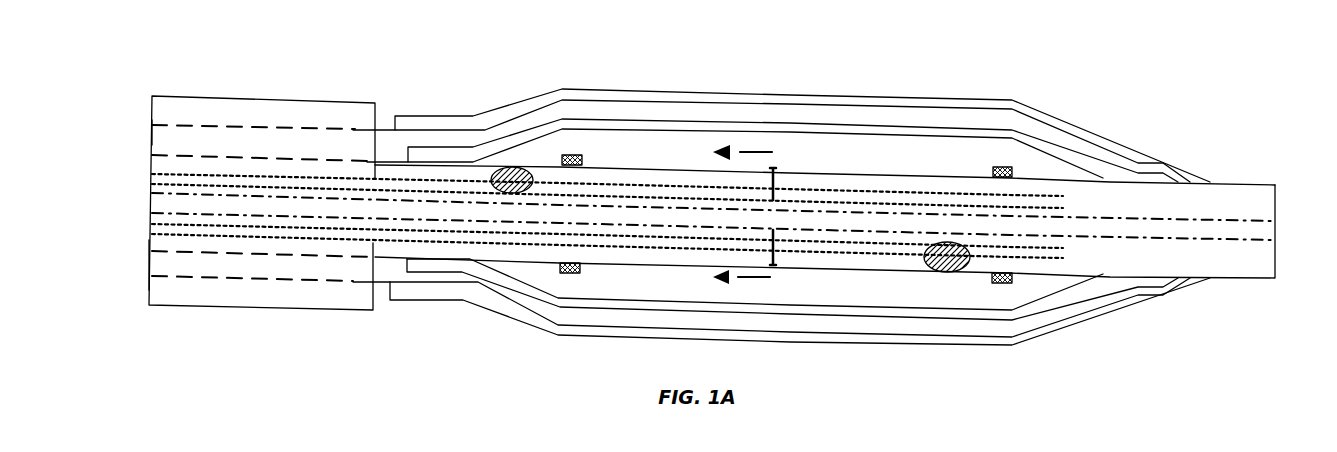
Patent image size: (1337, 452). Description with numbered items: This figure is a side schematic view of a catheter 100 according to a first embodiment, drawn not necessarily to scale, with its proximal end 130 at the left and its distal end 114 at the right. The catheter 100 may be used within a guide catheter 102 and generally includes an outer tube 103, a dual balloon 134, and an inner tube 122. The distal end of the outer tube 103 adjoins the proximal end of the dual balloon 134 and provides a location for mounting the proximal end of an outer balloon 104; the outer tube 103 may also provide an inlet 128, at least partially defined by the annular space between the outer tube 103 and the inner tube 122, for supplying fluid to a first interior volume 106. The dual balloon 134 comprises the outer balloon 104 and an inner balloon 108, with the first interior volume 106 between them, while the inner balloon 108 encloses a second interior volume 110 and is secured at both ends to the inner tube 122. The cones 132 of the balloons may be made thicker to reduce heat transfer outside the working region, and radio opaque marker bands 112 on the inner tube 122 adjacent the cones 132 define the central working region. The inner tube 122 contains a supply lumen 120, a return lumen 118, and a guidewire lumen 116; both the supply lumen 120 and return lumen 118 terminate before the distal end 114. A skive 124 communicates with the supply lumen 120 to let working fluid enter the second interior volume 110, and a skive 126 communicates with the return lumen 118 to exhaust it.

The catheter 100 is at (434, 393).
The guide catheter 102 is at (268, 96).
The outer tube 103 is at (362, 128).
The outer balloon 104 is at (630, 92).
The first interior volume 106 is at (684, 112).
The inner balloon 108 is at (780, 110).
The second interior volume 110 is at (853, 150).
The radio opaque marker bands 112 is at (1003, 167).
The distal end 114 is at (1300, 217).
The guidewire lumen 116 is at (1277, 230).
The return lumen 118 is at (152, 175).
The supply lumen 120 is at (152, 231).
The inner tube 122 is at (896, 175).
The skive 124 is at (945, 272).
The skive 126 is at (513, 166).
The inlet 128 is at (152, 132).
The proximal end 130 is at (101, 248).
The cones 132 is at (523, 125).
The dual balloon 134 is at (866, 95).